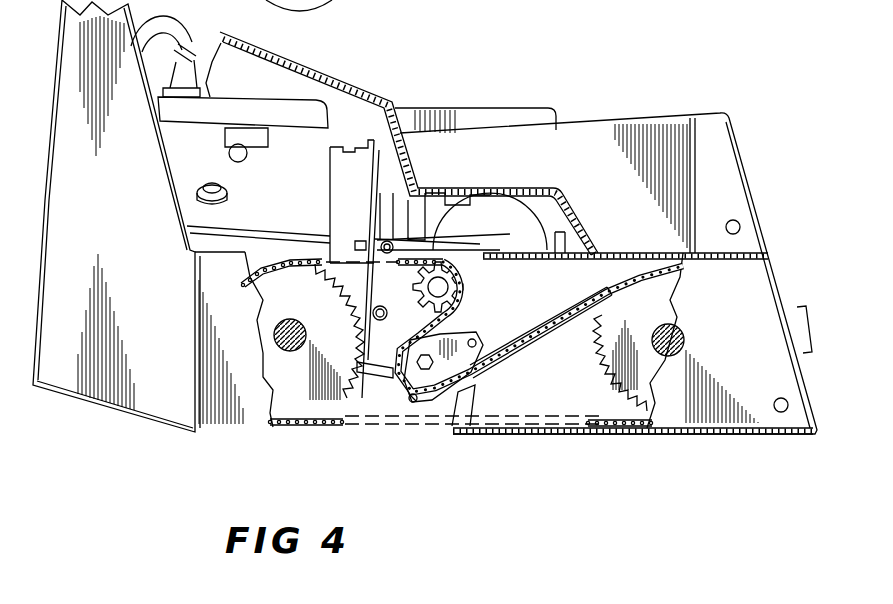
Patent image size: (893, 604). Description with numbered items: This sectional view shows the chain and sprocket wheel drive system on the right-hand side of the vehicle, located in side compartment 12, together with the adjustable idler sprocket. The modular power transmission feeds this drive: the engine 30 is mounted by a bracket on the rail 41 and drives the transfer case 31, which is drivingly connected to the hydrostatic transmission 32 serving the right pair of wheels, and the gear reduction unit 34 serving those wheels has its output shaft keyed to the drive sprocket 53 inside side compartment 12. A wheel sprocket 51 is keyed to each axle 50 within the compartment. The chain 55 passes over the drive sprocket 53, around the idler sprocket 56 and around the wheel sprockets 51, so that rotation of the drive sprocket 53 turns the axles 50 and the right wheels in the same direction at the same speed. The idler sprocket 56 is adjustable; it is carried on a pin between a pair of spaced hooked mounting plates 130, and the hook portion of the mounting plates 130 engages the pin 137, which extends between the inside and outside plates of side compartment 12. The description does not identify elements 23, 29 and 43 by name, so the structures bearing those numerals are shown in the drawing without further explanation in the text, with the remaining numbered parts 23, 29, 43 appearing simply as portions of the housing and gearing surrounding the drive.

The side compartment 12 is at (778, 274).
The hopper side wall 23 is at (108, 192).
The cover rail 29 is at (372, 97).
The engine 30 is at (340, 68).
The transfer case 31 is at (356, 170).
The hydrostatic transmission 32 is at (396, 186).
The gear reduction unit 34 is at (537, 228).
The rail 41 is at (380, 374).
The ratchet gear 43 is at (390, 300).
The axle 50 is at (290, 320).
The wheel sprocket 51 is at (262, 368).
The drive sprocket 53 is at (447, 265).
The chain 55 is at (301, 431).
The idler sprocket 56 is at (392, 373).
The hooked mounting plates 130 is at (476, 337).
The pin 137 is at (414, 402).